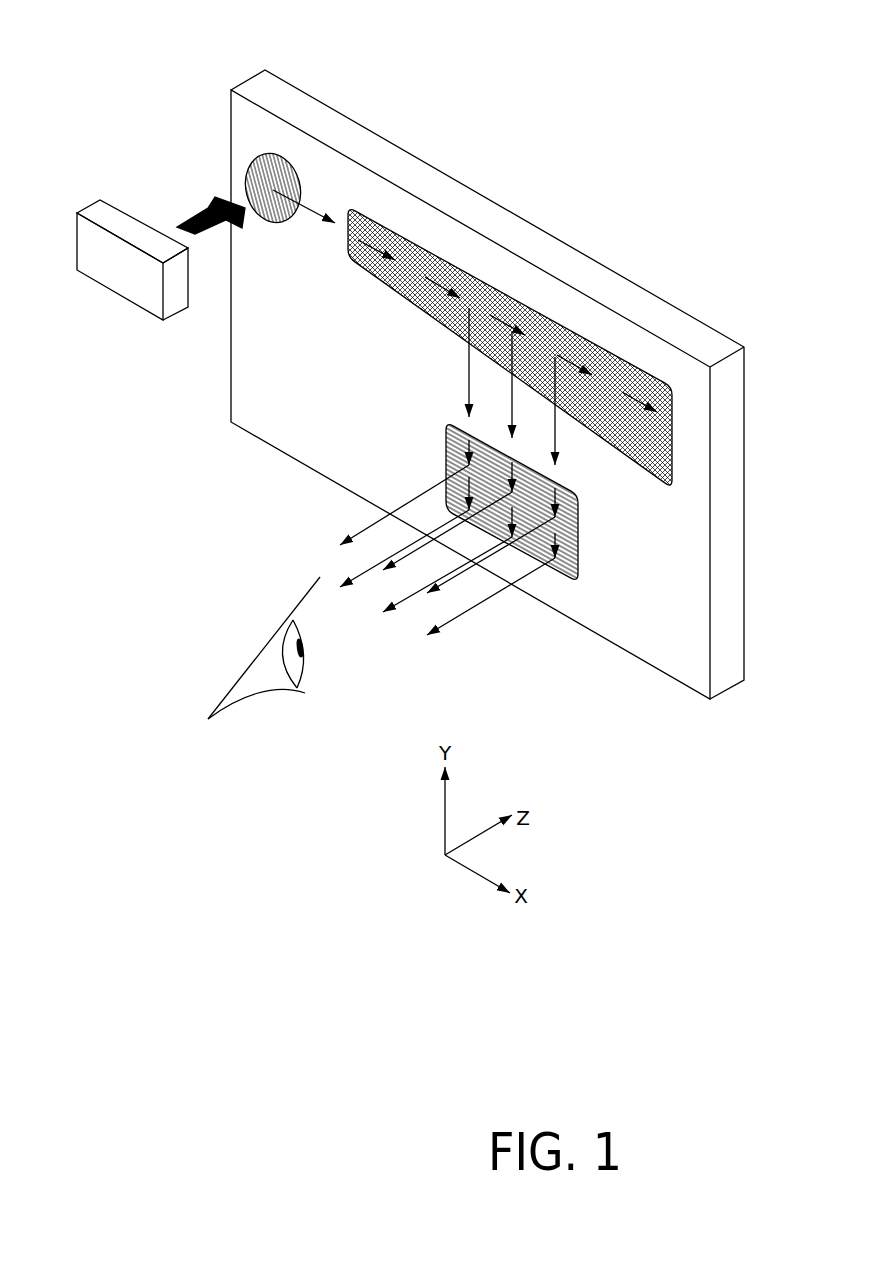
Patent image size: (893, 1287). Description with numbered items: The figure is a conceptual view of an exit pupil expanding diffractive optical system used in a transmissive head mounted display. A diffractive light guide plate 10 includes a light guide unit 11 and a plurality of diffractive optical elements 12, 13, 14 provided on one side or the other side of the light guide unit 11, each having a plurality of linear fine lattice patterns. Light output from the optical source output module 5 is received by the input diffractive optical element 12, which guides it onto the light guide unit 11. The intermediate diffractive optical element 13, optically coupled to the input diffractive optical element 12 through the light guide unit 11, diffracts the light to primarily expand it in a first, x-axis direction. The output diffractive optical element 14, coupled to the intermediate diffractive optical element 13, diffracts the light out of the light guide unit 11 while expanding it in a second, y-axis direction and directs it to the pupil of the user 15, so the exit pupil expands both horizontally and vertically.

The diffractive light guide plate 10 is at (237, 65).
The light guide unit 11 is at (298, 88).
The input diffractive optical element 12 is at (260, 155).
The intermediate diffractive optical element 13 is at (597, 343).
The output diffractive optical element 14 is at (552, 582).
The pupil of the user 15 is at (255, 698).
The optical source output module 5 is at (130, 285).